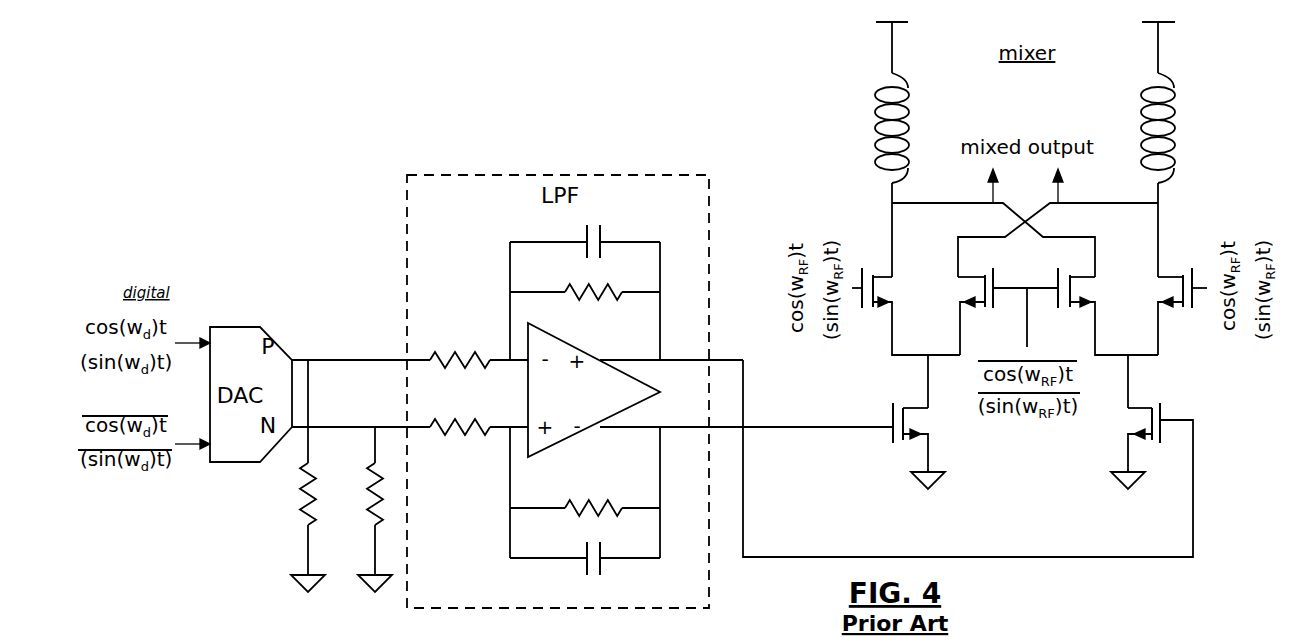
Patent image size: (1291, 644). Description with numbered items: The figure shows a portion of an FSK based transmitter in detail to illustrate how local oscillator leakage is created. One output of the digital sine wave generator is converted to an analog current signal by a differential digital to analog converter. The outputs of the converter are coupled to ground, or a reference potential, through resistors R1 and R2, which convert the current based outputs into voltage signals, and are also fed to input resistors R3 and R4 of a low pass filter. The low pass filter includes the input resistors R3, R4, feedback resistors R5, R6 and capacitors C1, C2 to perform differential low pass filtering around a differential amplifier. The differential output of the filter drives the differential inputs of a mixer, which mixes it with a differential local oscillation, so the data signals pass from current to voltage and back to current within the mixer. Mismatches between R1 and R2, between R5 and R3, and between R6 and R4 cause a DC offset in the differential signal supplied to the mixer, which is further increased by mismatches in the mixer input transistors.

The resistor R1 is at (295, 476).
The resistor R2 is at (362, 509).
The input resistor R3 is at (460, 344).
The input resistor R4 is at (460, 441).
The resistor R5 is at (585, 307).
The resistor R6 is at (585, 493).
The capacitor C1 is at (585, 234).
The capacitor C2 is at (585, 564).